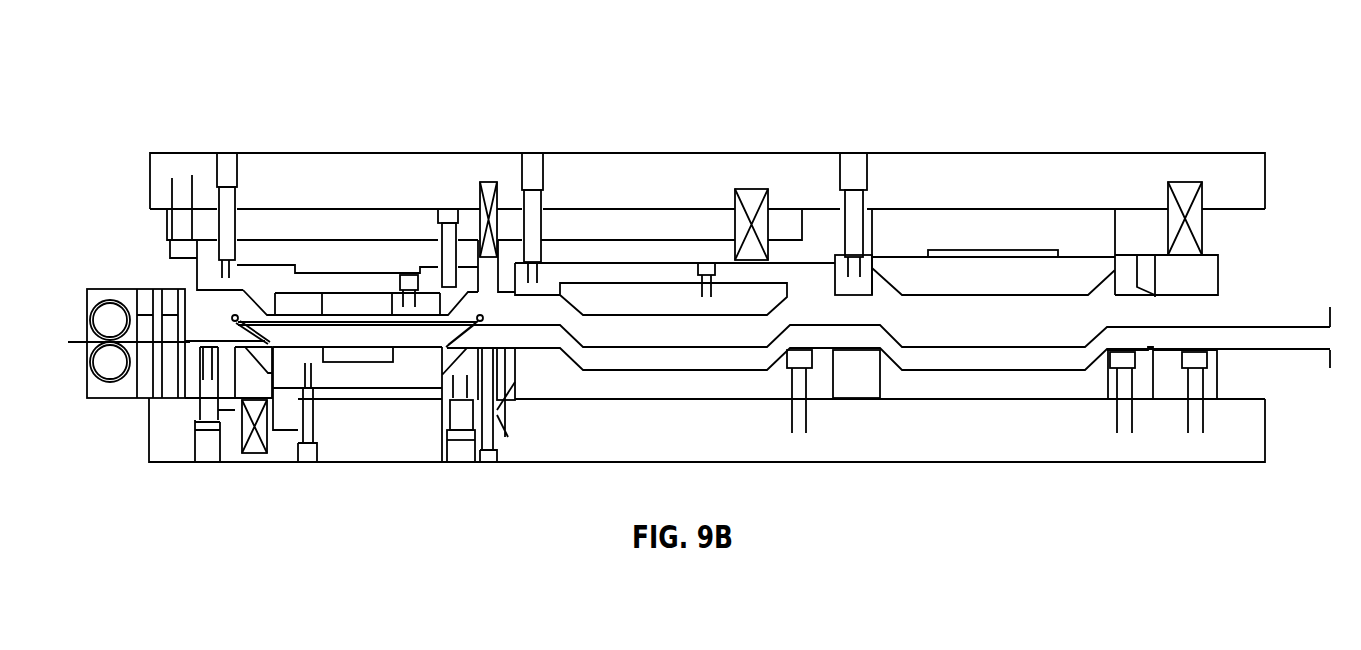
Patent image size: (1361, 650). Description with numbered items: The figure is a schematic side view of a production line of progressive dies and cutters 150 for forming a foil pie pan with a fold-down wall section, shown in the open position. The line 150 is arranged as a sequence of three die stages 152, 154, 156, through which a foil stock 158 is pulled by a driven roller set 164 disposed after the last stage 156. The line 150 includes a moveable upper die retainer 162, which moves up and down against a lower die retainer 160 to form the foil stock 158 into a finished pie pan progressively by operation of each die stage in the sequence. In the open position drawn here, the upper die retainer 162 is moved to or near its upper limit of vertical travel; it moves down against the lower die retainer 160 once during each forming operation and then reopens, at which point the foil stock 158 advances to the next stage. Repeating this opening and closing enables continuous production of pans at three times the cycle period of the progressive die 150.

The production line of progressive dies and cutters 150 is at (233, 68).
The die stage 152 is at (973, 173).
The die stage 154 is at (663, 173).
The last stage 156 is at (315, 172).
The foil stock 158 is at (1262, 325).
The lower die retainer 160 is at (1247, 428).
The upper die retainer 162 is at (1245, 183).
The driven roller set 164 is at (108, 297).